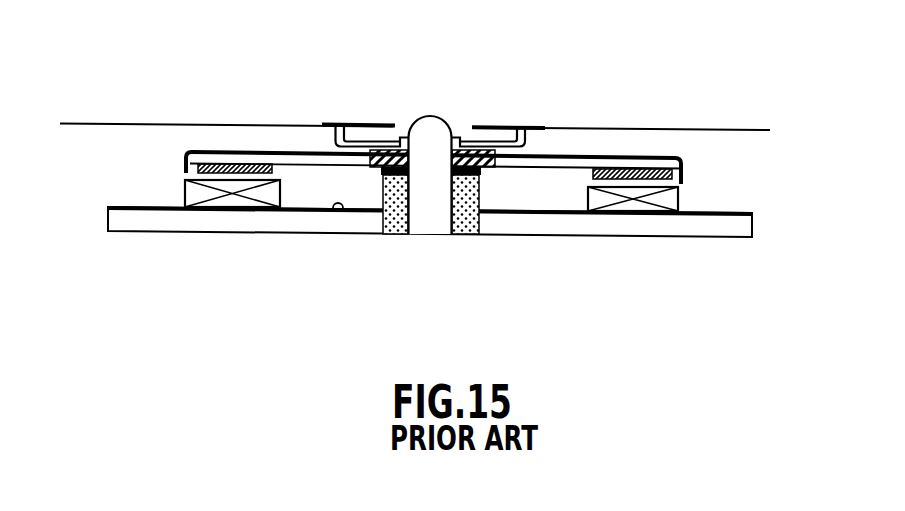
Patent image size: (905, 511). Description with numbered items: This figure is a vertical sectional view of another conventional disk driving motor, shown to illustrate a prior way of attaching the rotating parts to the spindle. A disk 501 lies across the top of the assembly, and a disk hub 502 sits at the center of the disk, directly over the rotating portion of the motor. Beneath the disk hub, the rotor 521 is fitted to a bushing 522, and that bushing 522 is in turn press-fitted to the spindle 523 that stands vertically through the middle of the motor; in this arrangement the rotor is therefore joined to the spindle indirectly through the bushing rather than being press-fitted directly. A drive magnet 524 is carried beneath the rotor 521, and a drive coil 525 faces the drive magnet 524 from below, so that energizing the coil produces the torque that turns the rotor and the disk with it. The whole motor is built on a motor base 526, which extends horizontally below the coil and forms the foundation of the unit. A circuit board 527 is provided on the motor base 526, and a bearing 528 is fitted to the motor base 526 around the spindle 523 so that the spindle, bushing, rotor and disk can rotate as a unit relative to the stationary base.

The disk 501 is at (748, 128).
The disk hub 502 is at (362, 121).
The rotor 521 is at (563, 155).
The bushing 522 is at (462, 142).
The spindle 523 is at (429, 116).
The drive magnet 524 is at (648, 165).
The drive coil 525 is at (680, 198).
The motor base 526 is at (634, 238).
The circuit board 527 is at (335, 204).
The bearing 528 is at (390, 234).